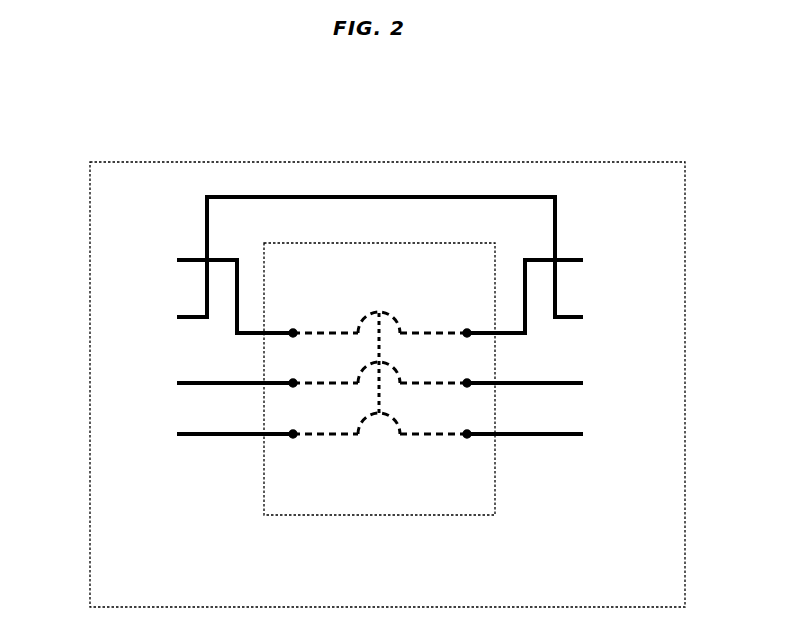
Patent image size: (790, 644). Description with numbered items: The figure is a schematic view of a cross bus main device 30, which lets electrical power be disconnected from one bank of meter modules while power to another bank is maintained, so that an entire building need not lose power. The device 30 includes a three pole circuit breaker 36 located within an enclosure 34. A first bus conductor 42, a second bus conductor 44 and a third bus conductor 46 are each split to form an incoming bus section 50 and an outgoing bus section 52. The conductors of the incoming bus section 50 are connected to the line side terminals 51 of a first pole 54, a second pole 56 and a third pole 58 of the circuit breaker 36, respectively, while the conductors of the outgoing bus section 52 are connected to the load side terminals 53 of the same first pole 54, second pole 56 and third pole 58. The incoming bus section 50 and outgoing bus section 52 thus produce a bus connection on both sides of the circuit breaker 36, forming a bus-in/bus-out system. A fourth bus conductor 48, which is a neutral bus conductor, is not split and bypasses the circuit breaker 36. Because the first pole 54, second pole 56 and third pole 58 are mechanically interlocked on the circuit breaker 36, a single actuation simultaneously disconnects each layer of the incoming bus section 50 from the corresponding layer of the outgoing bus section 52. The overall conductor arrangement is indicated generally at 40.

The cross bus main device 30 is at (598, 100).
The enclosure 34 is at (124, 162).
The three pole circuit breaker 36 is at (290, 516).
The conductive trace circuit 40 is at (593, 201).
The first bus conductor 42 is at (178, 259).
The second bus conductor 44 is at (178, 382).
The third bus conductor 46 is at (178, 433).
The fourth bus conductor 48 is at (178, 316).
The incoming bus section 50 is at (558, 494).
The line side terminals 51 is at (465, 337).
The outgoing bus section 52 is at (199, 493).
The load side terminals 53 is at (295, 337).
The first pole 54 is at (393, 320).
The second pole 56 is at (396, 372).
The third pole 58 is at (396, 425).